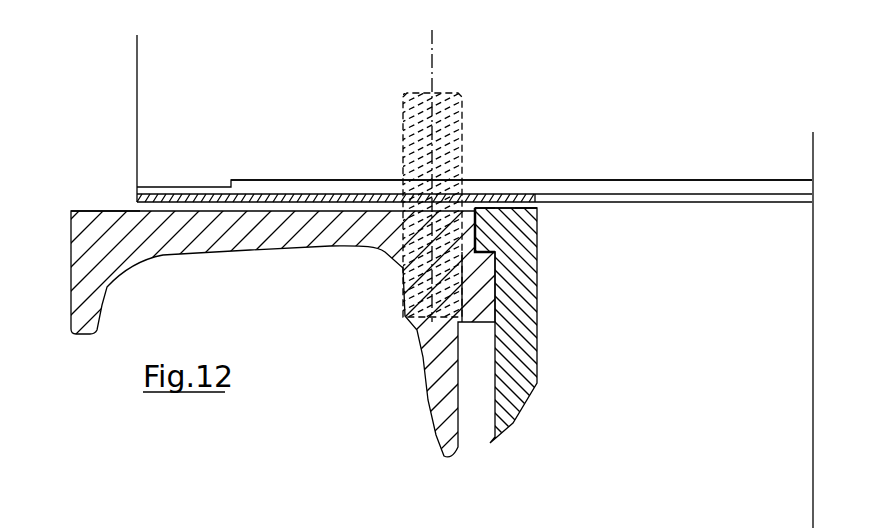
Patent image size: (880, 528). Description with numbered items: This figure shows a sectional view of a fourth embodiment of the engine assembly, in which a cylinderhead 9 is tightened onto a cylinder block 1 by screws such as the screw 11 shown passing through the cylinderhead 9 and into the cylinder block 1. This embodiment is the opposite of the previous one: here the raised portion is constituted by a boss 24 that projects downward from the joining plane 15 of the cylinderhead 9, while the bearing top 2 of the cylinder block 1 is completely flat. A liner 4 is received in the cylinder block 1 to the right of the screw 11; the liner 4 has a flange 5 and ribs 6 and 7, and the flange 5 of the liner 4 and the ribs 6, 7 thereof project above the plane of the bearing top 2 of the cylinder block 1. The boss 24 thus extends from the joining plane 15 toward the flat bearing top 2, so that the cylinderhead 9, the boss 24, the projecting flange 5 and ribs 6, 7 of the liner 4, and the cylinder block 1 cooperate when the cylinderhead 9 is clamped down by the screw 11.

The cylinder block 1 is at (105, 262).
The bearing top 2 is at (125, 211).
The liner 4 is at (518, 355).
The flange 5 is at (503, 232).
The rib 6 is at (528, 208).
The rib 7 is at (488, 206).
The cylinderhead 9 is at (243, 140).
The screw 11 is at (481, 106).
The joining plane 15 is at (340, 180).
The boss 24 is at (196, 186).